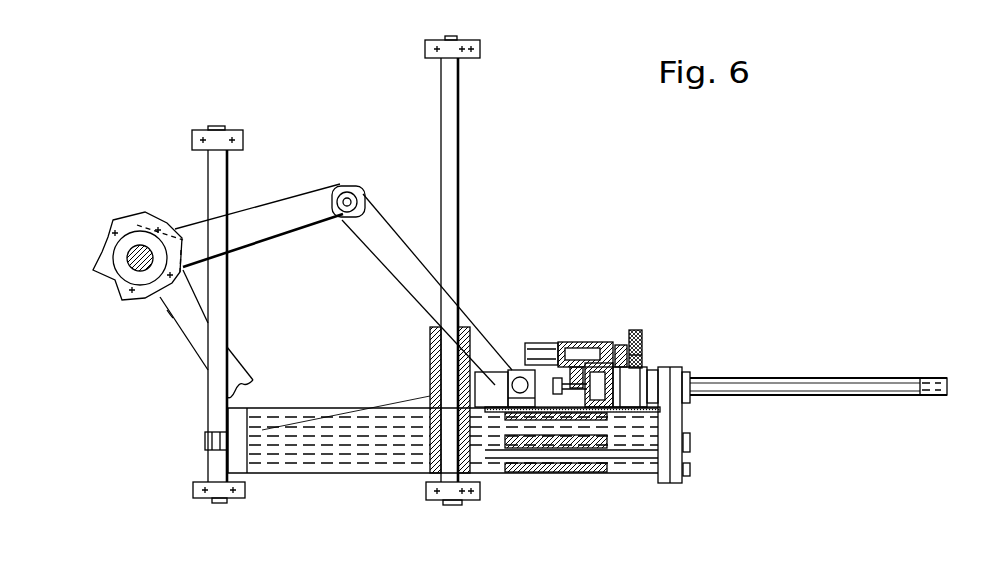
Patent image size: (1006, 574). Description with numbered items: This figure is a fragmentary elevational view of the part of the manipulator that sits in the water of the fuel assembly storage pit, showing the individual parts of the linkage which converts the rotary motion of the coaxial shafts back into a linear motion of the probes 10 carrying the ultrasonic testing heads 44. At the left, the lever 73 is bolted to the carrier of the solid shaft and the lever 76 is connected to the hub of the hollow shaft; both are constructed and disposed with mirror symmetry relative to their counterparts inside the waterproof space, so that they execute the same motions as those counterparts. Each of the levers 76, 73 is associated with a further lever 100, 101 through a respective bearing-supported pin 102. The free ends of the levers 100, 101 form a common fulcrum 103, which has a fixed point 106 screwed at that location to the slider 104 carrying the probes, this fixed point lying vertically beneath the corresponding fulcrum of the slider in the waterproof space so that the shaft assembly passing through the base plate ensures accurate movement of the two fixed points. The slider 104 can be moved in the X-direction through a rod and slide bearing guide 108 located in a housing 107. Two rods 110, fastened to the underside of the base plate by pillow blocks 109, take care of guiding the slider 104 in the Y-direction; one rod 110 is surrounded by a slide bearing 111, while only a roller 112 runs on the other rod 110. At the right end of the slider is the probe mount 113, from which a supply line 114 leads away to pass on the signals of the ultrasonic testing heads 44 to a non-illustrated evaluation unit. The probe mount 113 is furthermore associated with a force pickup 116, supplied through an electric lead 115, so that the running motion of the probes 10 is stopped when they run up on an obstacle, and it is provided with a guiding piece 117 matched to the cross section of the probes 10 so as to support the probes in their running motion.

The probe 10 is at (844, 378).
The ultrasonic testing head 44 is at (948, 392).
The lever 73 is at (172, 314).
The lever 76 is at (252, 213).
The further lever 100 is at (390, 233).
The further lever 101 is at (477, 384).
The bearing-supported pin 102 is at (334, 190).
The common fulcrum 103 is at (527, 370).
The slider 104 is at (555, 491).
The fixed point 106 is at (498, 340).
The housing 107 is at (360, 476).
The rod and slide bearing guide 108 is at (625, 470).
The pillow block 109 is at (233, 130).
The rod 110 is at (212, 186).
The slide bearing 111 is at (430, 336).
The roller 112 is at (216, 434).
The probe mount 113 is at (658, 361).
The supply line 114 is at (637, 335).
The electric lead 115 is at (538, 342).
The force pickup 116 is at (578, 342).
The guiding piece 117 is at (689, 400).